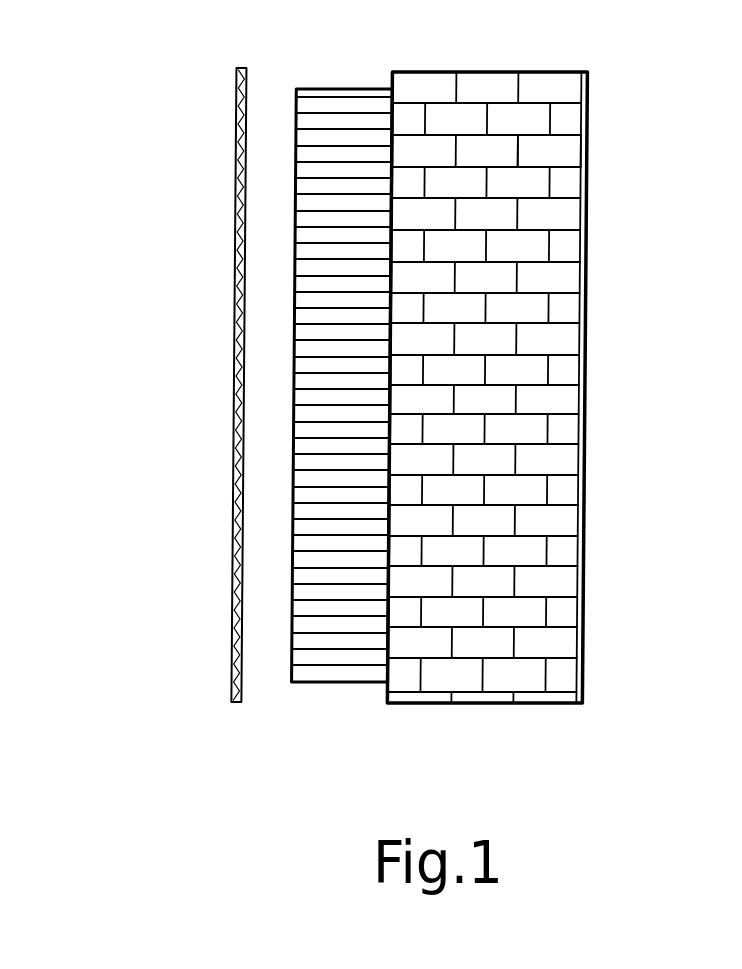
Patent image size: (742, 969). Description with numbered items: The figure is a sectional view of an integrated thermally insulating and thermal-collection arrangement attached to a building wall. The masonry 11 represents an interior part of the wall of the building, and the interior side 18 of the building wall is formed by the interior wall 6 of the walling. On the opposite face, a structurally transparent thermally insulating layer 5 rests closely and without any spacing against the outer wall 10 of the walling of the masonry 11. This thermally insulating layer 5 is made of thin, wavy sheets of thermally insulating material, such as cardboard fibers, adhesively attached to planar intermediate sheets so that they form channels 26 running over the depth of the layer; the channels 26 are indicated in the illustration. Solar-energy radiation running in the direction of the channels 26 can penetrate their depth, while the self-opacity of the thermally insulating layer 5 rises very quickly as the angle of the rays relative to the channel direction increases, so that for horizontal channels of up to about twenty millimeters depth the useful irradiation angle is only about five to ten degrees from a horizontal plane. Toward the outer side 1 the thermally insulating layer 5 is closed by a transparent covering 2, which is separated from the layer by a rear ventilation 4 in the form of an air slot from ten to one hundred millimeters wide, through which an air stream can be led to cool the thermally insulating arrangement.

The outer side 1 is at (208, 311).
The transparent covering 2 is at (233, 572).
The rear ventilation 4 is at (263, 466).
The structurally transparent thermally insulating layer 5 is at (256, 450).
The interior wall 6 is at (552, 387).
The outer wall 10 is at (395, 238).
The masonry 11 is at (540, 148).
The interior side 18 is at (610, 393).
The channels 26 is at (318, 627).